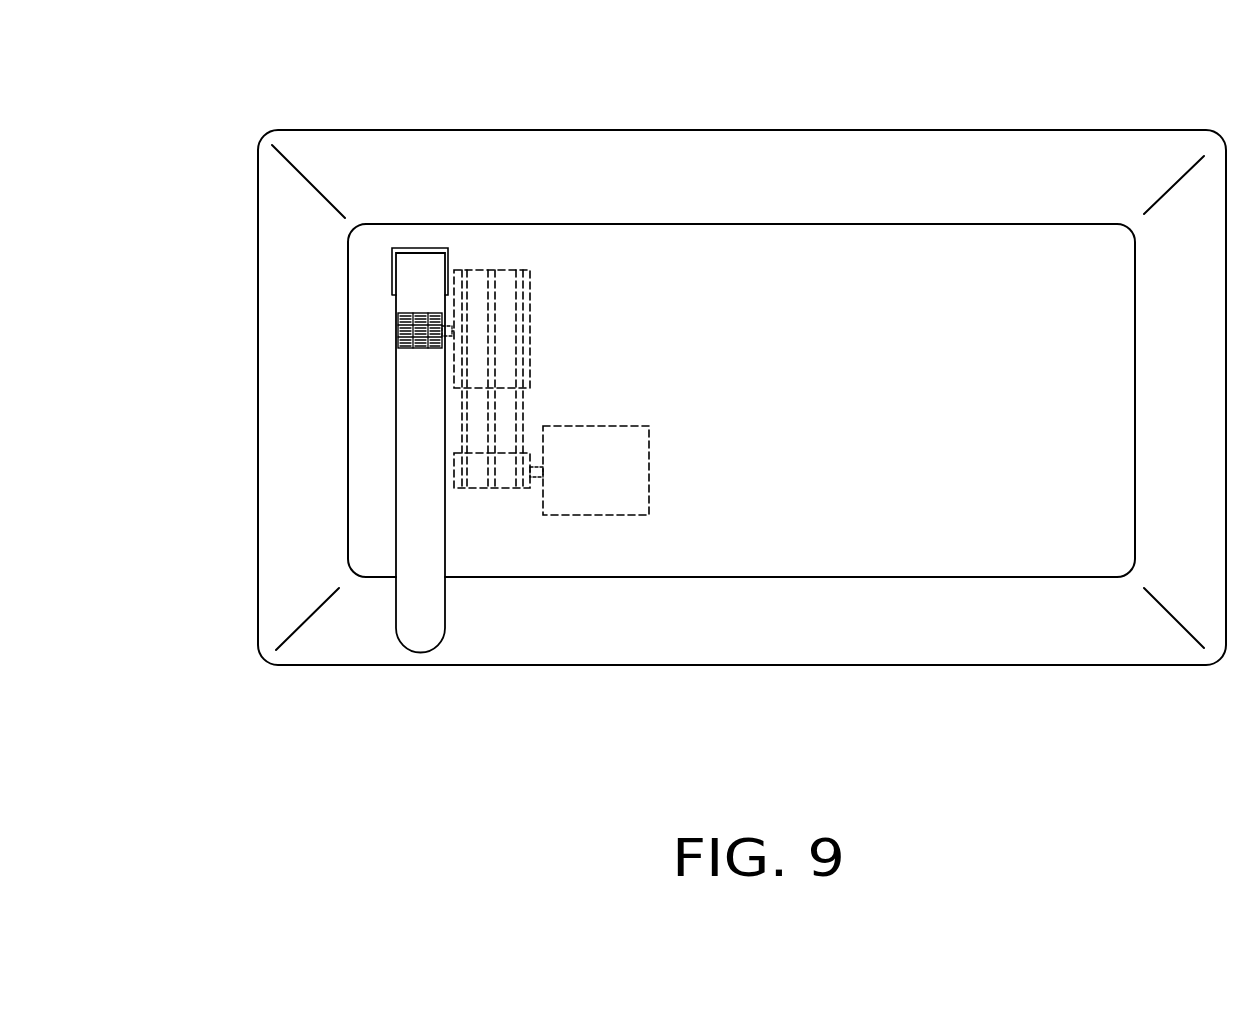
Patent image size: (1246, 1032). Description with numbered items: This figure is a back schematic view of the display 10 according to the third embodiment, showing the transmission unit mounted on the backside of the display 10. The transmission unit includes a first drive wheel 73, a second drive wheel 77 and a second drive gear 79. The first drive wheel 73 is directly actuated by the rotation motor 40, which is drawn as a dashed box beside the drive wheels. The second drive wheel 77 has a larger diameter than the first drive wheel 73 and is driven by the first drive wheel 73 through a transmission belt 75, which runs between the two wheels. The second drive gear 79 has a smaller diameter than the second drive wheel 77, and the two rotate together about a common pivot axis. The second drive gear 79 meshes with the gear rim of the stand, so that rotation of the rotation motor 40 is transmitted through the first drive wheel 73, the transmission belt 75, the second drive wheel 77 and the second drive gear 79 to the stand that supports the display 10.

The display 10 is at (878, 275).
The rotation motor 40 is at (599, 492).
The first drive wheel 73 is at (477, 478).
The transmission belt 75 is at (492, 473).
The second drive wheel 77 is at (506, 283).
The second drive gear 79 is at (407, 317).